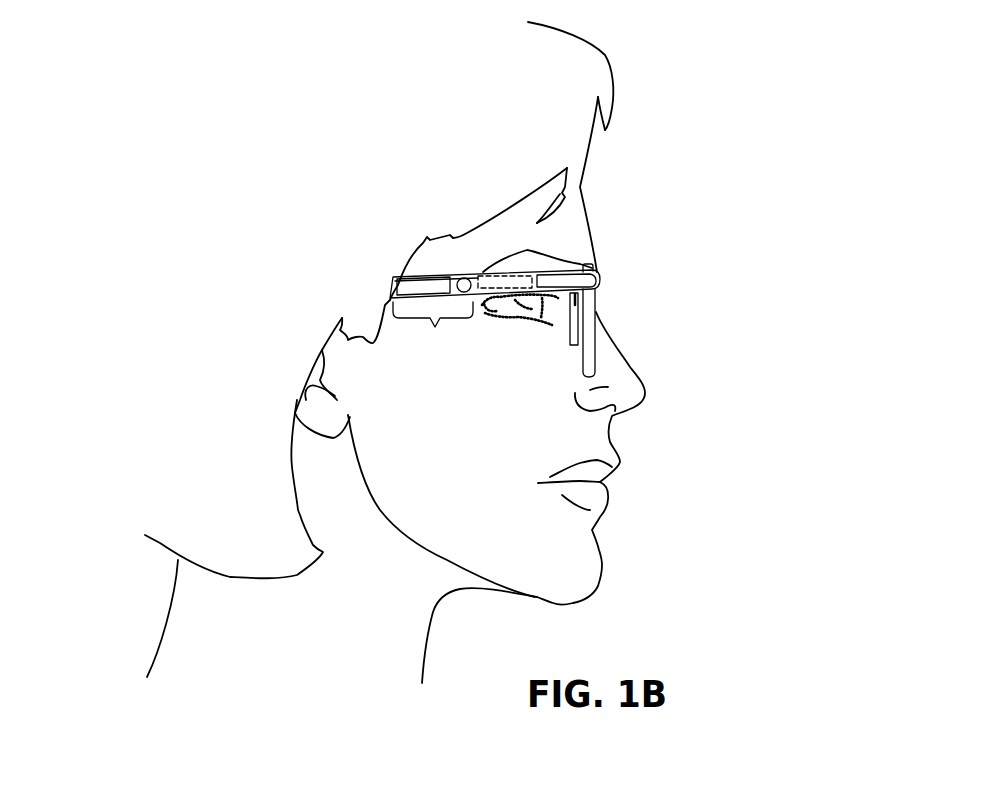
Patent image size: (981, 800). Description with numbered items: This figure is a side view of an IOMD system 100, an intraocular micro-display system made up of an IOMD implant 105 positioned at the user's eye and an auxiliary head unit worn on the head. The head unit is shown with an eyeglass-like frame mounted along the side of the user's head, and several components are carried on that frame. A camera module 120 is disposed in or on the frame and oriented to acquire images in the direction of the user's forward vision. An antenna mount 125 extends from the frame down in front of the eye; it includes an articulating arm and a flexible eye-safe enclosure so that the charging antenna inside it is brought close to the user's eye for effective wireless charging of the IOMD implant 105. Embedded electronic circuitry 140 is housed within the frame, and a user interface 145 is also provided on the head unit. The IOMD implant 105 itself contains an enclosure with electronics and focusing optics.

The IOMD system 100 is at (536, 262).
The IOMD implant 105 is at (510, 307).
The camera module 120 is at (597, 272).
The antenna mount 125 is at (558, 336).
The embedded electronic circuitry 140 is at (517, 278).
The user interface 145 is at (433, 328).